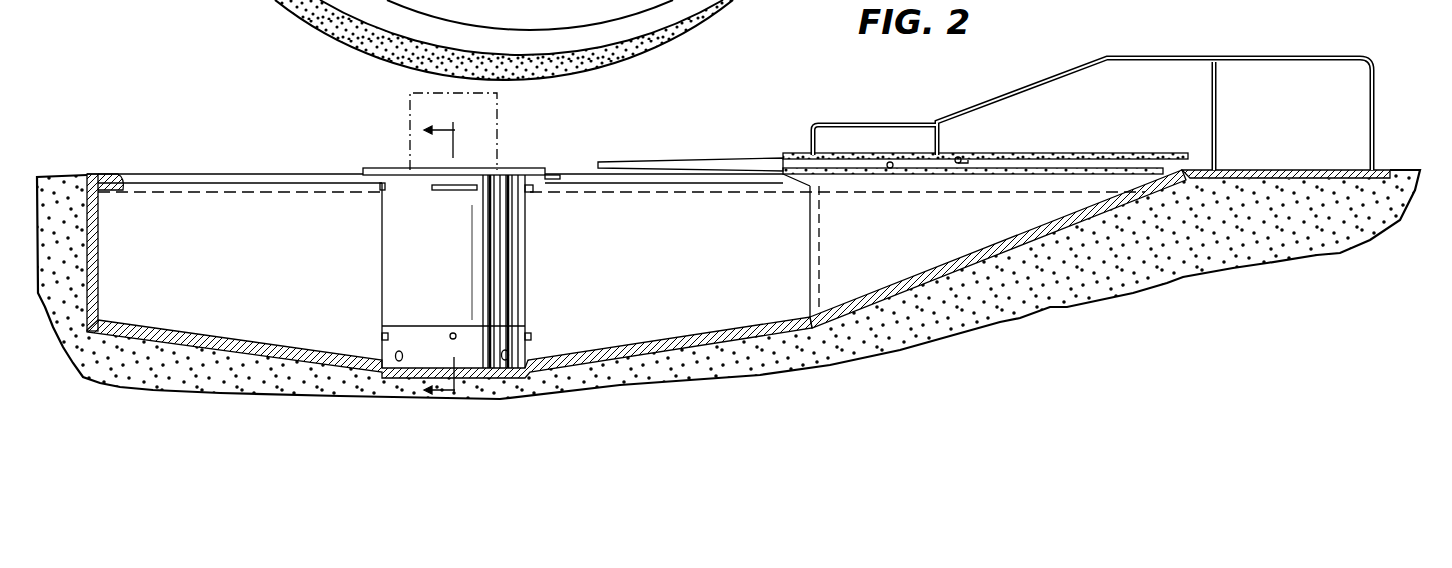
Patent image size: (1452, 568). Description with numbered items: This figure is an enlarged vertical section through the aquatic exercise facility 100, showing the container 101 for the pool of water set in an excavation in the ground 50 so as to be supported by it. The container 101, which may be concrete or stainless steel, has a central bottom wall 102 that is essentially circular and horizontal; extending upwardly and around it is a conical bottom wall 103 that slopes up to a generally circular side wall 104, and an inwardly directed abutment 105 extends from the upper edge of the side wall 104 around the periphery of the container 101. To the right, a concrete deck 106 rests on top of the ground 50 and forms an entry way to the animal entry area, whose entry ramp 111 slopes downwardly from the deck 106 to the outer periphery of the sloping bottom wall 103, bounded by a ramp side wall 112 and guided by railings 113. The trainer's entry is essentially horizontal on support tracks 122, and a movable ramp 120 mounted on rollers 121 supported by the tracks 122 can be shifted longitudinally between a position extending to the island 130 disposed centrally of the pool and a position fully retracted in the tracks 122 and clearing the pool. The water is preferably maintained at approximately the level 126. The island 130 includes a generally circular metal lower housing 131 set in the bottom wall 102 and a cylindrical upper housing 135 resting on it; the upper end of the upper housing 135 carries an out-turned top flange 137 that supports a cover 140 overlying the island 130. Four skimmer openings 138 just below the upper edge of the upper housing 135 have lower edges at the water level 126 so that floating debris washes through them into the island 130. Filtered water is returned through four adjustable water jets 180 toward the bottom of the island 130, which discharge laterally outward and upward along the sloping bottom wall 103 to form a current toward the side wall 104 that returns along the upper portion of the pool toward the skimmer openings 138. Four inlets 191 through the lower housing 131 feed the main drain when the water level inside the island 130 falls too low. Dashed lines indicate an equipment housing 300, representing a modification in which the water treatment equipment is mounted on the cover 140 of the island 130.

The ground 50 is at (58, 182).
The aquatic exercise facility 100 is at (205, 116).
The container 101 is at (124, 146).
The central bottom wall 102 is at (500, 376).
The bottom wall 103 is at (165, 336).
The side wall 104 is at (93, 252).
The abutment 105 is at (115, 178).
The concrete deck 106 is at (1281, 171).
The entry ramp 111 is at (985, 254).
The ramp side wall 112 is at (1015, 226).
The railings 113 is at (1147, 57).
The movable ramp 120 is at (660, 160).
The rollers 121 is at (961, 157).
The support tracks 122 is at (790, 153).
The water level 126 is at (245, 192).
The island 130 is at (522, 146).
The lower housing 131 is at (525, 352).
The upper housing 135 is at (522, 258).
The top flange 137 is at (533, 179).
The skimmer openings 138 is at (432, 190).
The cover 140 is at (527, 168).
The water jets 180 is at (452, 332).
The inlets 191 is at (394, 356).
The equipment housing 300 is at (404, 126).